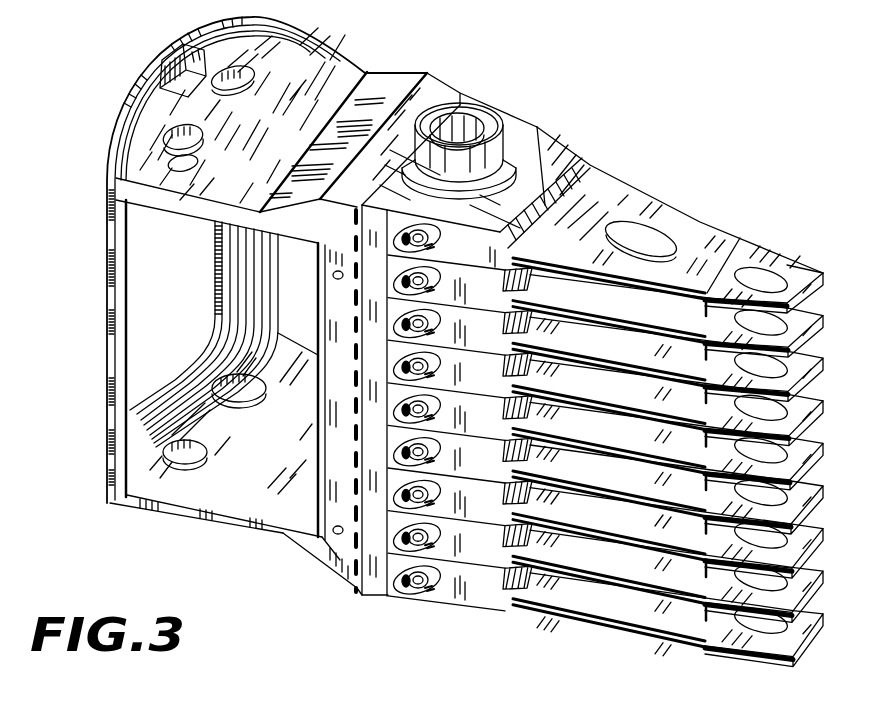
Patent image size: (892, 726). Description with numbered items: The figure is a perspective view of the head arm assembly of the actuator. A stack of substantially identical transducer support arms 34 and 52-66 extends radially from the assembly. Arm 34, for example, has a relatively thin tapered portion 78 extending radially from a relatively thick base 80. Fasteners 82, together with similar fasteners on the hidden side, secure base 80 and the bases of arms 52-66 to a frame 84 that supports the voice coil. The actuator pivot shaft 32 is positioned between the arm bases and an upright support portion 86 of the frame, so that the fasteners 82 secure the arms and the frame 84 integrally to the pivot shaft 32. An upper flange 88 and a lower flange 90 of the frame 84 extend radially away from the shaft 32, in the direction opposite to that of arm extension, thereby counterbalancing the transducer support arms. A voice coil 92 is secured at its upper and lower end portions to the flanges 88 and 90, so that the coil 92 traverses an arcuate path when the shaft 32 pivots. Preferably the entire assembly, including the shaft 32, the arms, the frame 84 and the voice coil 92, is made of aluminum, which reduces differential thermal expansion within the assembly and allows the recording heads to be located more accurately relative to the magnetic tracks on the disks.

The actuator pivot shaft 32 is at (468, 110).
The transducer support arm 34 is at (725, 243).
The transducer support arm 52 is at (803, 328).
The transducer support arm 66 is at (608, 622).
The tapered portion 78 is at (643, 210).
The base 80 is at (562, 165).
The fasteners 82 is at (432, 251).
The frame 84 is at (317, 553).
The upright support portion 86 is at (333, 443).
The upper flange 88 is at (342, 77).
The lower flange 90 is at (180, 517).
The voice coil 92 is at (105, 355).